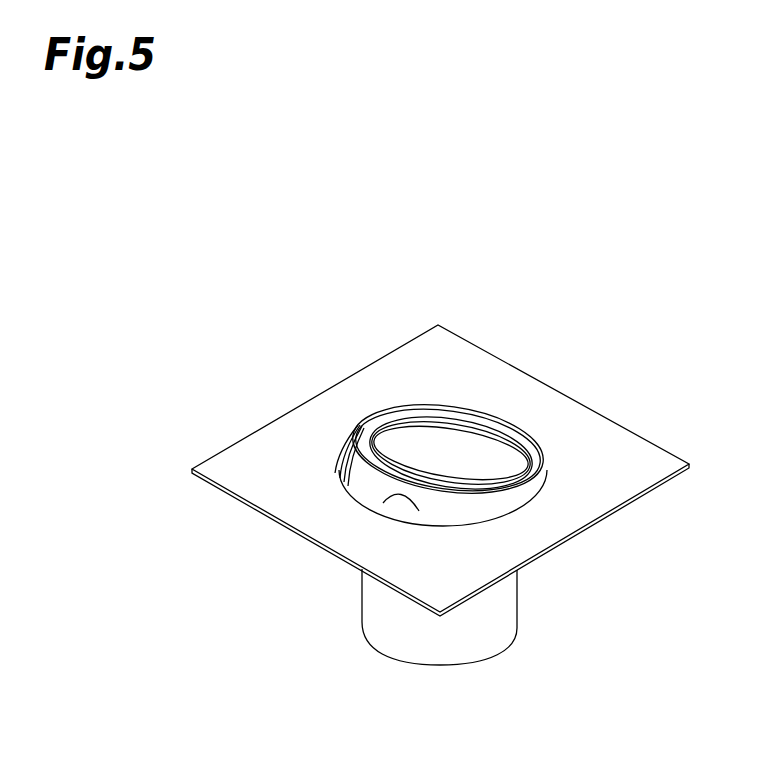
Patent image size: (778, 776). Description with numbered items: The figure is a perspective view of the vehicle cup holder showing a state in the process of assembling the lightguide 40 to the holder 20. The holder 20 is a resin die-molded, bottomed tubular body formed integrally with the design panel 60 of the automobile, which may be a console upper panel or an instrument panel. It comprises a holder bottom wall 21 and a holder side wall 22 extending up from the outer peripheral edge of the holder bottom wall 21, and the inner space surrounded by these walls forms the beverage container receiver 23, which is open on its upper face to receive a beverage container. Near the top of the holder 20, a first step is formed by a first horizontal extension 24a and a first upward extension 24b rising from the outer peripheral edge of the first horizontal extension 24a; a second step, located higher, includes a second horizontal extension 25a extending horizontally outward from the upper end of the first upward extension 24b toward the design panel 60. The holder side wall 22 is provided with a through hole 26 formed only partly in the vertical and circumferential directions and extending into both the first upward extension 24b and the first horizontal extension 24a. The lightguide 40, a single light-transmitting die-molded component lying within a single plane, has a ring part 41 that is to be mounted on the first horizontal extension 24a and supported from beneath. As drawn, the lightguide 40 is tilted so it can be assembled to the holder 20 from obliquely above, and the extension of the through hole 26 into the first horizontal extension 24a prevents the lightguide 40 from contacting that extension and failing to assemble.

The holder 20 is at (493, 625).
The holder bottom wall 21 is at (437, 668).
The holder side wall 22 is at (497, 592).
The beverage container receiver 23 is at (383, 503).
The first horizontal extension 24a is at (343, 487).
The first upward extension 24b is at (343, 443).
The second horizontal extension 25a is at (333, 470).
The through hole 26 is at (493, 428).
The lightguide 40 is at (397, 407).
The ring part 41 is at (366, 407).
The design panel 60 is at (645, 468).